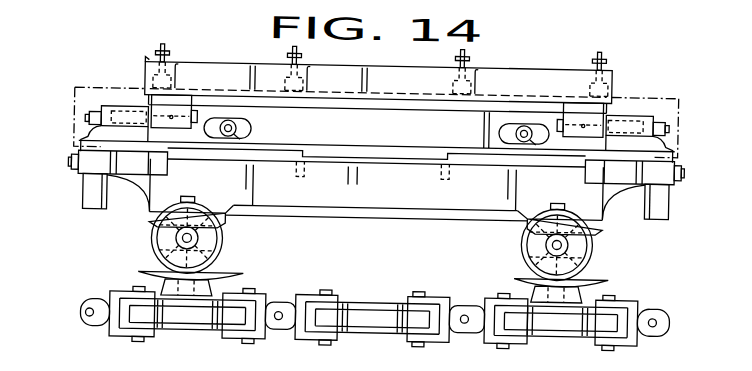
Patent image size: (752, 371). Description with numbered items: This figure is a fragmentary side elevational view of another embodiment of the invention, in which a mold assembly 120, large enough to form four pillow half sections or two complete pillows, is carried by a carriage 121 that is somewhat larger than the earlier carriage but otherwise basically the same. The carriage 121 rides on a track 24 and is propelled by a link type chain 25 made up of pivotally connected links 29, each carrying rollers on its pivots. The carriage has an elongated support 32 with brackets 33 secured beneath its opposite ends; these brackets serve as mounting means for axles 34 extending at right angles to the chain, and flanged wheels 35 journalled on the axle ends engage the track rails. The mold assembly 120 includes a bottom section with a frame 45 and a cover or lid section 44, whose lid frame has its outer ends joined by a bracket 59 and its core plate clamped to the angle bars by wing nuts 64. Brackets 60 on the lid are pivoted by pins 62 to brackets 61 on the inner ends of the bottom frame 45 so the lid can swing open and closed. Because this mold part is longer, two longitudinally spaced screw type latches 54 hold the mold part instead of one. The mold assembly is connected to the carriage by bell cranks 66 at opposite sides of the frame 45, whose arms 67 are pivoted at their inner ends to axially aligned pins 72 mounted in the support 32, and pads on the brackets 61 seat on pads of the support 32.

The mold assembly 120 is at (105, 87).
The carriage 121 is at (146, 238).
The bracket 59 is at (373, 78).
The cover or lid section 44 is at (546, 64).
The wing nut 64 is at (466, 56).
The bracket 60 is at (180, 106).
The pin 62 is at (197, 121).
The frame 45 is at (420, 138).
The screw type latch 54 is at (249, 132).
The bracket 61 is at (100, 138).
The pin 72 is at (72, 168).
The bell crank 66 is at (96, 173).
The arm 67 is at (92, 198).
The support 32 is at (440, 218).
The bracket 33 is at (231, 227).
The axle 34 is at (176, 246).
The flanged wheel 35 is at (227, 258).
The track 24 is at (252, 275).
The link type chain 25 is at (255, 343).
The link 29 is at (182, 334).